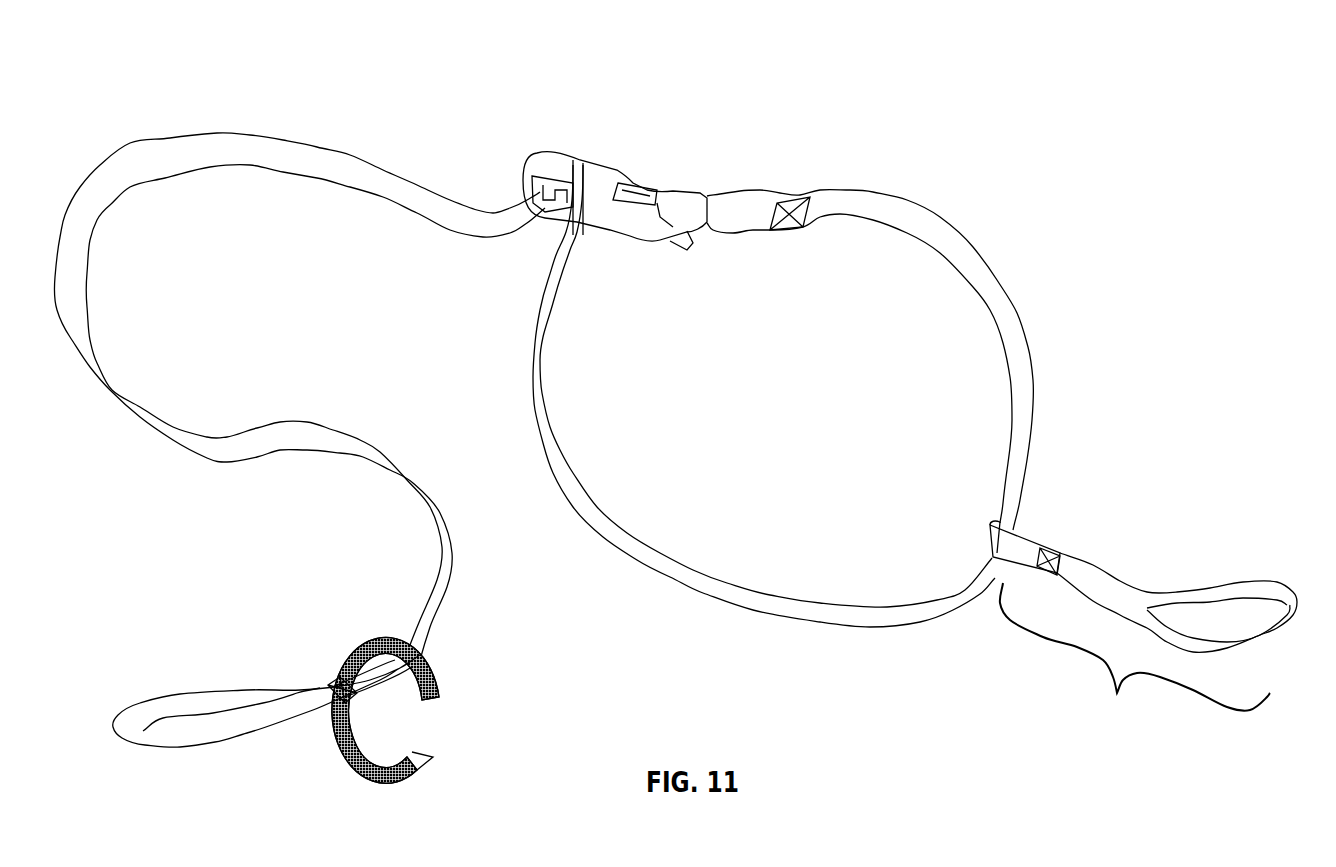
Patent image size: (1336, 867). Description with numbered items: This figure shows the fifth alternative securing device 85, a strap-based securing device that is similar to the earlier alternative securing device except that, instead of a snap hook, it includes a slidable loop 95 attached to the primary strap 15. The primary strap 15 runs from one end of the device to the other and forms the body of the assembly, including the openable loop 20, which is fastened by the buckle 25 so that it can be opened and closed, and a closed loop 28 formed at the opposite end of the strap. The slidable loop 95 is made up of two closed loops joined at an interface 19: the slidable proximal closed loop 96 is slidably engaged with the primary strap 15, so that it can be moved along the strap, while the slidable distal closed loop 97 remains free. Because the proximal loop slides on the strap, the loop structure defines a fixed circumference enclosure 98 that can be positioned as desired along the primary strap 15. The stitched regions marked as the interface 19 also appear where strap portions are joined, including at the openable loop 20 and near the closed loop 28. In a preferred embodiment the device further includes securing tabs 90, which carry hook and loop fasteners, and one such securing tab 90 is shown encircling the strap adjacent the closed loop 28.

The primary strap 15 is at (127, 140).
The interface 19 is at (793, 200).
The openable loop 20 is at (937, 190).
The buckle 25 is at (600, 173).
The closed loop 28 is at (220, 737).
The fifth alternative securing device embodiment 85 is at (628, 126).
The securing tabs 90 is at (433, 687).
The slidable loop 95 is at (1145, 579).
The slidable proximal closed loop 96 is at (1023, 547).
The slidable distal closed loop 97 is at (1250, 585).
The fixed circumference enclosure 98 is at (1135, 650).